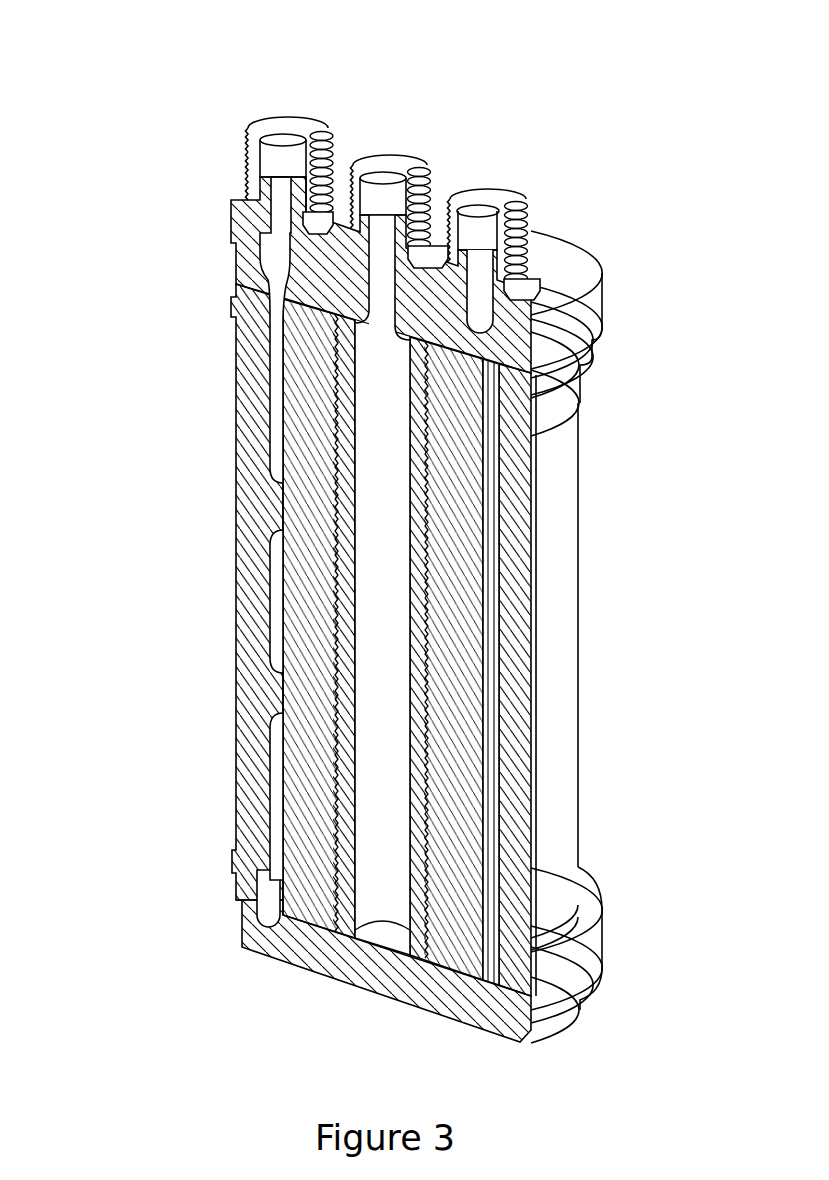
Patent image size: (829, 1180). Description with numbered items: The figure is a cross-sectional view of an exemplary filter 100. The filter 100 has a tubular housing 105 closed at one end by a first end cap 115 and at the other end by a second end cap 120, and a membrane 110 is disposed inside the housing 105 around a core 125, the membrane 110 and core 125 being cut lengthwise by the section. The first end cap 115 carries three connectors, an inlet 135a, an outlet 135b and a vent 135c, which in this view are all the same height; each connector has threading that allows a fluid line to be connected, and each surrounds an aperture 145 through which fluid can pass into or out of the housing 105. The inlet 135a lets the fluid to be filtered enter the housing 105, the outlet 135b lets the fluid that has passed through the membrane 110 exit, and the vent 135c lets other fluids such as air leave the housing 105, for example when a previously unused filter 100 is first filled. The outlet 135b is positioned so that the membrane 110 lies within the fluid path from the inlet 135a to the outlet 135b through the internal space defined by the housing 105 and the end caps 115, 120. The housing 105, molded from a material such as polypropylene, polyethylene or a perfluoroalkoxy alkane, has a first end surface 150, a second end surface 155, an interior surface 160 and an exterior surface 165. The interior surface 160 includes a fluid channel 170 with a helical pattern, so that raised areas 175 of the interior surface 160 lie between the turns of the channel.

The filter 100 is at (397, 525).
The housing 105 is at (577, 668).
The membrane 110 is at (315, 333).
The first end cap 115 is at (603, 283).
The second end cap 120 is at (375, 996).
The core 125 is at (375, 850).
The inlet 135a is at (290, 126).
The outlet 135b is at (386, 165).
The vent 135c is at (485, 200).
The aperture 145 is at (265, 176).
The first end surface 150 is at (540, 350).
The second end surface 155 is at (536, 973).
The interior surface 160 is at (272, 418).
The exterior surface 165 is at (557, 524).
The fluid channel 170 is at (277, 597).
The raised areas 175 is at (281, 503).